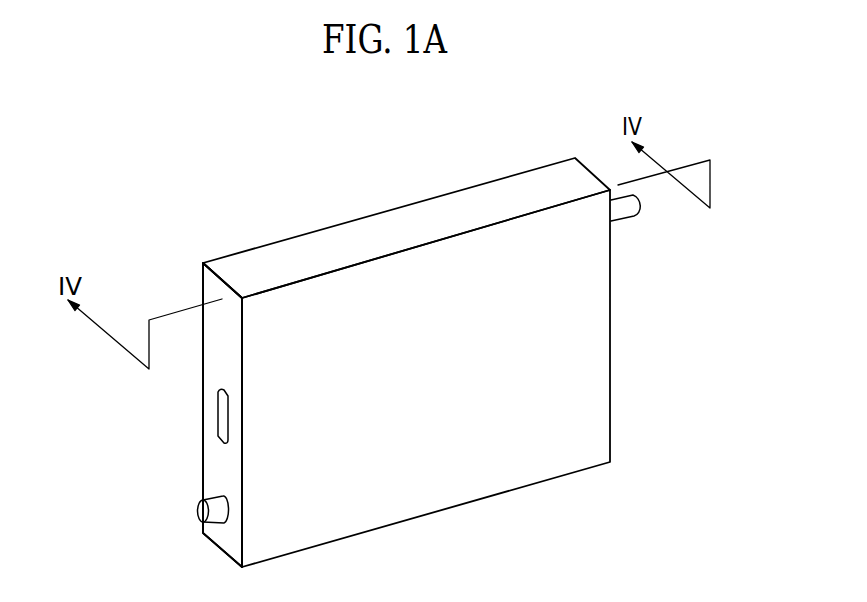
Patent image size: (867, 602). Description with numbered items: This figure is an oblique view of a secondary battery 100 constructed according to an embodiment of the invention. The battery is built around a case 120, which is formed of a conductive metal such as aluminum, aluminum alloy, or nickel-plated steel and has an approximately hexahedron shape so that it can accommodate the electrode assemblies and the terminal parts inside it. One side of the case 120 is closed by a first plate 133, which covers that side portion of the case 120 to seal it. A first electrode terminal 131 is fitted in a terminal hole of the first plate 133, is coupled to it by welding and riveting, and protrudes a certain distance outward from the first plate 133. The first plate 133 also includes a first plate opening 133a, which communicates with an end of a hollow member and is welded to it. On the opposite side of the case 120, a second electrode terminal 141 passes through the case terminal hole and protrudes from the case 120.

The secondary battery 100 is at (140, 165).
The case 120 is at (450, 493).
The first electrode terminal 131 is at (200, 504).
The first plate 133 is at (215, 464).
The first plate opening 133a is at (222, 414).
The second electrode terminal 141 is at (632, 210).